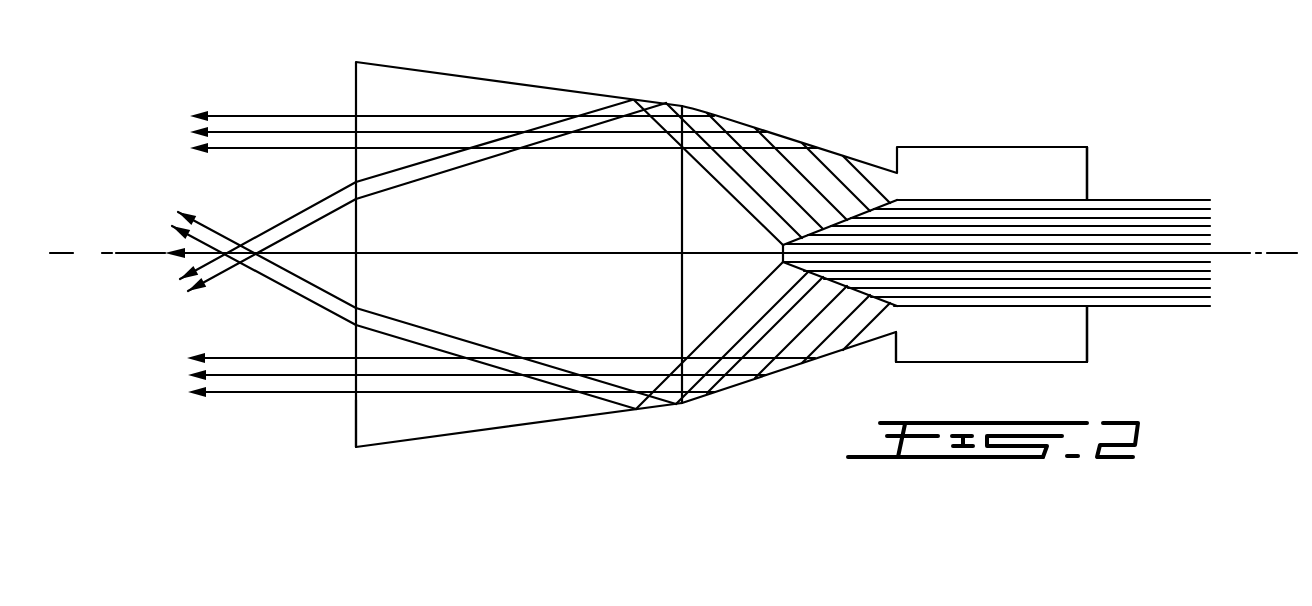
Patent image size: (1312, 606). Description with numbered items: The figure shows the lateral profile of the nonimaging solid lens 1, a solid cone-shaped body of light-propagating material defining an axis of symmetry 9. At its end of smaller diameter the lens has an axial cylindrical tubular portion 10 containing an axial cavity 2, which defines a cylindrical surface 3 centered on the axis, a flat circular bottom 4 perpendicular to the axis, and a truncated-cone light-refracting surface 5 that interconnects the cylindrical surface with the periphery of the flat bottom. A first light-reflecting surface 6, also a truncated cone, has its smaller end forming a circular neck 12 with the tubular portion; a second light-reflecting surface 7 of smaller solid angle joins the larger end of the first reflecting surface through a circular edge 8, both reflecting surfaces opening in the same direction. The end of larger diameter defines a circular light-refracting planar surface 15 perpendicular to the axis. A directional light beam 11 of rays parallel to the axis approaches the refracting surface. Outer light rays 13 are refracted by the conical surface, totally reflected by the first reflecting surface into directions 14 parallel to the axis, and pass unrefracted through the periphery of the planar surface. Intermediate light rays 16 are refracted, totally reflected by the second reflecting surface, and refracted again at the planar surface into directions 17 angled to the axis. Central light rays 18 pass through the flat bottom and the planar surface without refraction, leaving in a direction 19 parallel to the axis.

The nonimaging solid lens 1 is at (690, 74).
The axial cavity 2 is at (1100, 195).
The cylindrical surface 3 is at (1072, 305).
The flat circular bottom 4 is at (797, 238).
The light-refracting surface 5 is at (822, 281).
The first light-reflecting surface 6 is at (842, 155).
The second light-reflecting surface 7 is at (517, 82).
The circular edge 8 is at (682, 403).
The axis of symmetry 9 is at (80, 252).
The tubular portion 10 is at (962, 345).
The directional light beam 11 is at (1012, 260).
The circular neck 12 is at (890, 338).
The outer light rays 13 is at (285, 115).
The directions of outer rays 14 is at (187, 147).
The circular light-refracting planar surface 15 is at (350, 420).
The intermediate light rays 16 is at (440, 157).
The directions of intermediate rays 17 is at (173, 218).
The central light rays 18 is at (583, 249).
The direction of central rays 19 is at (177, 257).